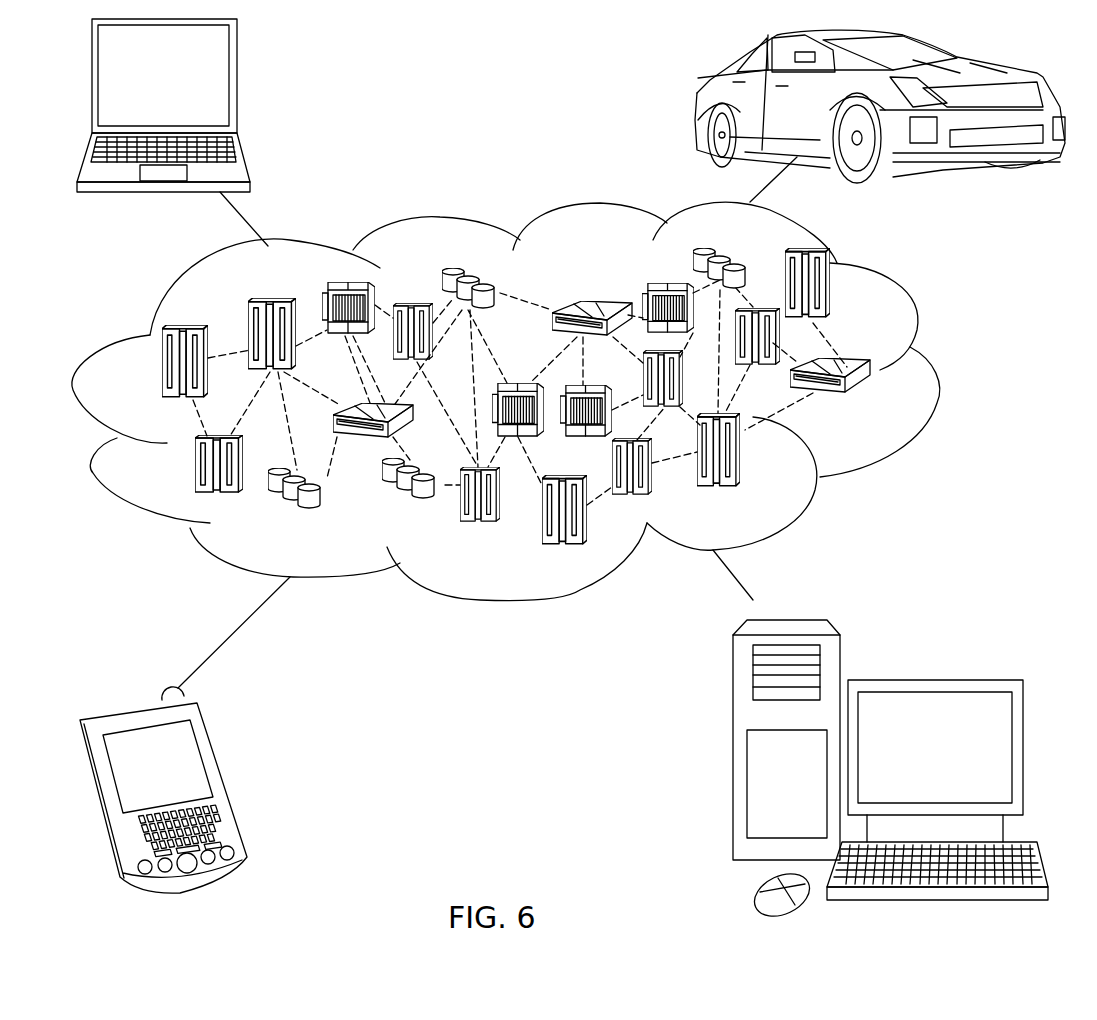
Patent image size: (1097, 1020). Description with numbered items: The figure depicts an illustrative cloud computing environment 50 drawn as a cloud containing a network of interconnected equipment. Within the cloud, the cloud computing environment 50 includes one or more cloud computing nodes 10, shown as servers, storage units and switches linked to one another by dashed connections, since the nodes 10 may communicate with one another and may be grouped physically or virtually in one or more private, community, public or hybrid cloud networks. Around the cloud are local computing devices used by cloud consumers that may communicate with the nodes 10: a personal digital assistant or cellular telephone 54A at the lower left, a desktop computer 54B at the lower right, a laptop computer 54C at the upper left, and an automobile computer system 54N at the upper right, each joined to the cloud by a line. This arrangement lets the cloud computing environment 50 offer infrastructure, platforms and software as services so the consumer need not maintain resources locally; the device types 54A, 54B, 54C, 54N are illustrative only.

The cloud computing node 10 is at (870, 405).
The cloud computing environment 50 is at (933, 373).
The personal digital assistant or cellular telephone 54A is at (225, 777).
The desktop computer 54B is at (932, 680).
The laptop computer 54C is at (237, 84).
The automobile computer system 54N is at (698, 98).